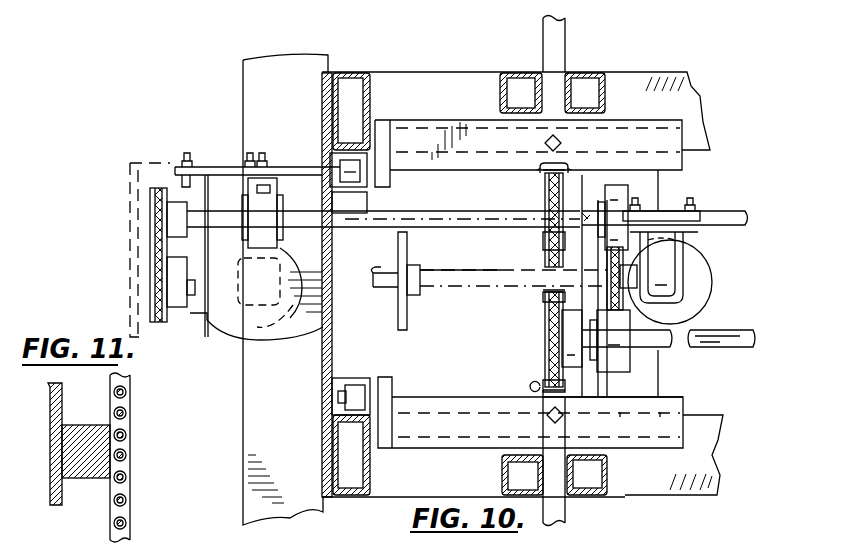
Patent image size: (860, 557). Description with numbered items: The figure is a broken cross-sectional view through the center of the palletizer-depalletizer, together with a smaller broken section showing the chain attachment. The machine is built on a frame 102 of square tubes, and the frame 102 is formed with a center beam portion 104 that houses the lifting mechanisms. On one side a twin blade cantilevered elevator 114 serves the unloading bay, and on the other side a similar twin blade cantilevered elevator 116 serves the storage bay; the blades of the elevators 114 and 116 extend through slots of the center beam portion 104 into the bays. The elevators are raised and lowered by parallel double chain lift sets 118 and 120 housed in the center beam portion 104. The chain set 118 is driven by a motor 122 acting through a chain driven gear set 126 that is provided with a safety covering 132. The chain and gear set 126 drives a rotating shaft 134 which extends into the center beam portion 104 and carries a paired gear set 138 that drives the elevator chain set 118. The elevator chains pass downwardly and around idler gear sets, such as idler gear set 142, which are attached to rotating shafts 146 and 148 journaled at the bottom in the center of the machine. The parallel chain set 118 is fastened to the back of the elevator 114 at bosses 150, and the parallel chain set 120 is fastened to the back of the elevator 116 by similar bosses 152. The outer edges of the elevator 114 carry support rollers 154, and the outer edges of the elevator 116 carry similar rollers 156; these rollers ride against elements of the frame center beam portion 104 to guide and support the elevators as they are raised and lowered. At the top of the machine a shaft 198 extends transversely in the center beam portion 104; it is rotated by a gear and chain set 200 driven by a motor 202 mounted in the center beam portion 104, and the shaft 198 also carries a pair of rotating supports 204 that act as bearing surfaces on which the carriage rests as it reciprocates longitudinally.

In FIG. 10, the frame 102 is at (250, 428).
In FIG. 10, the center beam portion 104 is at (352, 72).
In FIG. 10, the twin blade cantilevered elevator 114 is at (548, 28).
In FIG. 11, the twin blade cantilevered elevator 114 is at (50, 405).
In FIG. 10, the twin blade cantilevered elevator 116 is at (420, 405).
In FIG. 10, the chain lift set 118 is at (567, 190).
In FIG. 11, the chain lift set 118 is at (130, 487).
In FIG. 10, the chain lift set 120 is at (543, 300).
In FIG. 10, the motor 122 is at (225, 332).
In FIG. 10, the chain driven gear set 126 is at (150, 252).
In FIG. 10, the safety covering 132 is at (130, 218).
In FIG. 10, the rotating shaft 134 is at (430, 210).
In FIG. 10, the paired gear set 138 is at (545, 240).
In FIG. 10, the idler gear set 142 is at (545, 345).
In FIG. 10, the rotating shaft 146 is at (745, 346).
In FIG. 10, the rotating shaft 148 is at (736, 210).
In FIG. 10, the bosses 150 is at (545, 165).
In FIG. 11, the bosses 150 is at (78, 430).
In FIG. 10, the bosses 152 is at (543, 392).
In FIG. 10, the support rollers 154 is at (327, 160).
In FIG. 10, the rollers 156 is at (360, 385).
In FIG. 10, the shaft 198 is at (507, 267).
In FIG. 10, the gear and chain set 200 is at (637, 272).
In FIG. 10, the motor 202 is at (706, 285).
In FIG. 10, the rotating supports 204 is at (398, 242).